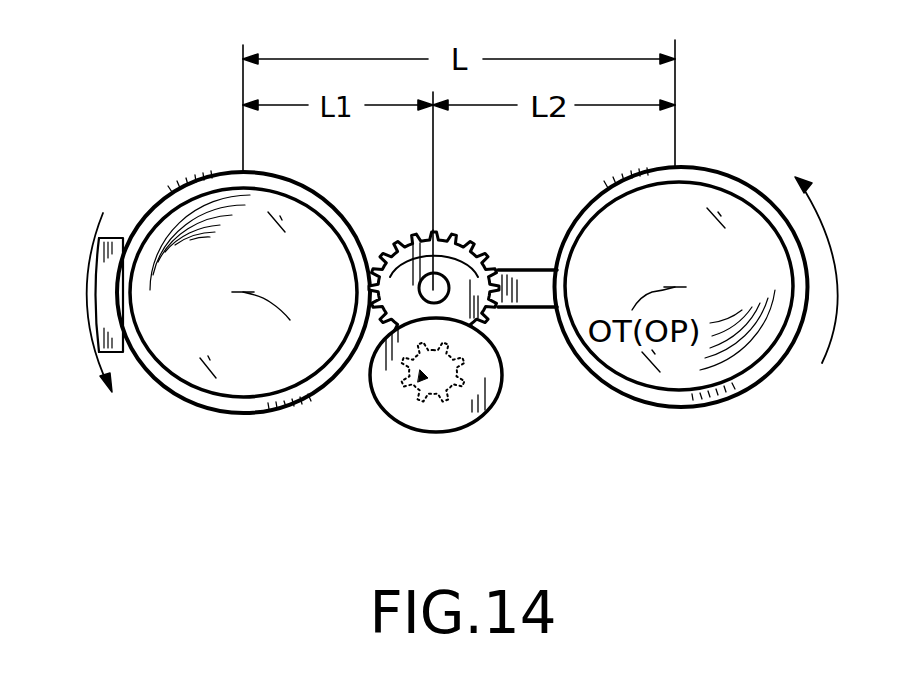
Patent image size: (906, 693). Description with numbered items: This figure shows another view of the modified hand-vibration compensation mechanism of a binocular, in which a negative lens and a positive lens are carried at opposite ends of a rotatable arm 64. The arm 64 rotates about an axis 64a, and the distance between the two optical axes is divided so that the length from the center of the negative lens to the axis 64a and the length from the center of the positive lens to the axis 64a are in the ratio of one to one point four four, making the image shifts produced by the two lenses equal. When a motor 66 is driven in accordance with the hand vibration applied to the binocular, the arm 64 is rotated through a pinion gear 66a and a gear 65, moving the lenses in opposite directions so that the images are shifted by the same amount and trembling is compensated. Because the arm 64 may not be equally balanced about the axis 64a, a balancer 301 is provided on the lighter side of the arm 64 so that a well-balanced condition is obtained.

The balancer 301 is at (118, 240).
The rotatable arm 64 is at (520, 272).
The axis of rotation 64a is at (402, 282).
The gear 65 is at (488, 312).
The motor 66 is at (412, 406).
The pinion gear 66a is at (448, 385).